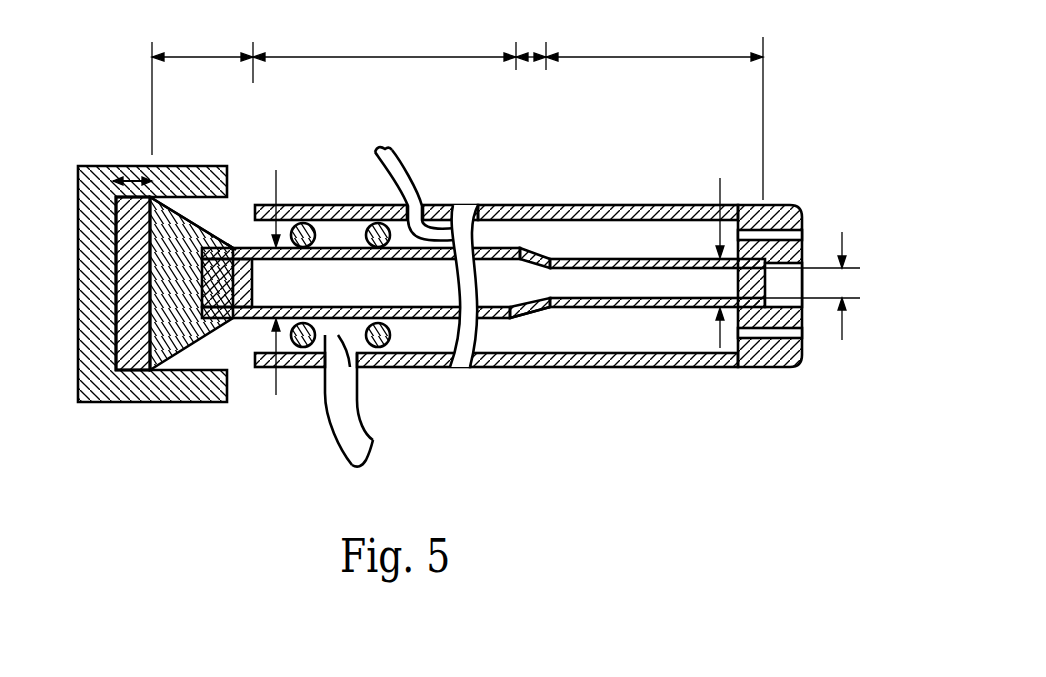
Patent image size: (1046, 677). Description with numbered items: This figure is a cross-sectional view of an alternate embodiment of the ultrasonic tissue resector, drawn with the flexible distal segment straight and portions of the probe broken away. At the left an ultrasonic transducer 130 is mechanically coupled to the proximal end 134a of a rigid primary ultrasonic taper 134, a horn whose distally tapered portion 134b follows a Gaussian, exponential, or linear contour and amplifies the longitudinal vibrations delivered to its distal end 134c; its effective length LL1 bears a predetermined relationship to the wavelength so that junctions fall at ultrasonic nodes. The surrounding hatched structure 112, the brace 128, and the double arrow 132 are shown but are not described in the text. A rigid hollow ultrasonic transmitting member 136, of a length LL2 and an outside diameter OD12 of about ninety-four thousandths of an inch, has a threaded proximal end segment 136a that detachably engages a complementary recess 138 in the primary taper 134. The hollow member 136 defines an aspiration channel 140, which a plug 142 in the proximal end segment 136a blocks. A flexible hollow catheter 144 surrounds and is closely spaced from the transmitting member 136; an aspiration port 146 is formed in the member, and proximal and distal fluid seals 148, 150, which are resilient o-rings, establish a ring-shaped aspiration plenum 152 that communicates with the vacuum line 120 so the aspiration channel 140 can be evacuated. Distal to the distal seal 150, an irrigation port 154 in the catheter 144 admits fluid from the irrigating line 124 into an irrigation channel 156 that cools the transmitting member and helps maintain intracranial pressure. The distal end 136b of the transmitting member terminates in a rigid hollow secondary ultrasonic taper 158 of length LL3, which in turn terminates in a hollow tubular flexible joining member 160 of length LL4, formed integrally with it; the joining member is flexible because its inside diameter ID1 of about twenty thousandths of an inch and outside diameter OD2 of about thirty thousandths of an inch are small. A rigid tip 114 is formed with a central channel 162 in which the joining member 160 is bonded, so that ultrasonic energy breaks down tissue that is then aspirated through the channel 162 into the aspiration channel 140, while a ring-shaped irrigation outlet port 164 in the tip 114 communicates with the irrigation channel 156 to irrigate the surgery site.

The coupling block 112 is at (77, 135).
The tip 114 is at (819, 255).
The vacuum line 120 is at (361, 415).
The irrigating line 124 is at (415, 164).
The coupling assembly 128 is at (126, 250).
The ultrasonic transducer 130 is at (122, 233).
The sliding direction 132 is at (133, 177).
The primary ultrasonic taper 134 is at (129, 286).
The proximal end of primary ultrasonic taper 134a is at (123, 370).
The distally tapered portion 134b is at (197, 353).
The distal end of primary ultrasonic taper 134c is at (234, 246).
The ultrasonic transmitting member 136 is at (483, 284).
The proximal end segment 136a is at (361, 286).
The distal end of transmitting member 136b is at (637, 230).
The recess 138 is at (227, 203).
The aspiration channel 140 is at (495, 400).
The plug 142 is at (188, 134).
The catheter 144 is at (648, 208).
The aspiration port 146 is at (366, 263).
The proximal fluid seal 148 is at (303, 347).
The distal fluid seal 150 is at (366, 190).
The aspiration plenum 152 is at (322, 453).
The irrigation port 154 is at (395, 123).
The irrigation channel 156 is at (498, 233).
The secondary ultrasonic taper 158 is at (532, 314).
The flexible joining member 160 is at (657, 225).
The central channel 162 is at (862, 283).
The irrigation outlet port 164 is at (810, 232).
The outside diameter of transmitting member OD12 is at (297, 264).
The outside diameter of flexible joining member OD2 is at (720, 180).
The inside diameter of flexible joining member ID1 is at (843, 338).
The effective length of primary taper LL1 is at (177, 55).
The length of transmitting member LL2 is at (390, 55).
The length of secondary taper LL3 is at (531, 55).
The length of flexible joining member LL4 is at (647, 55).